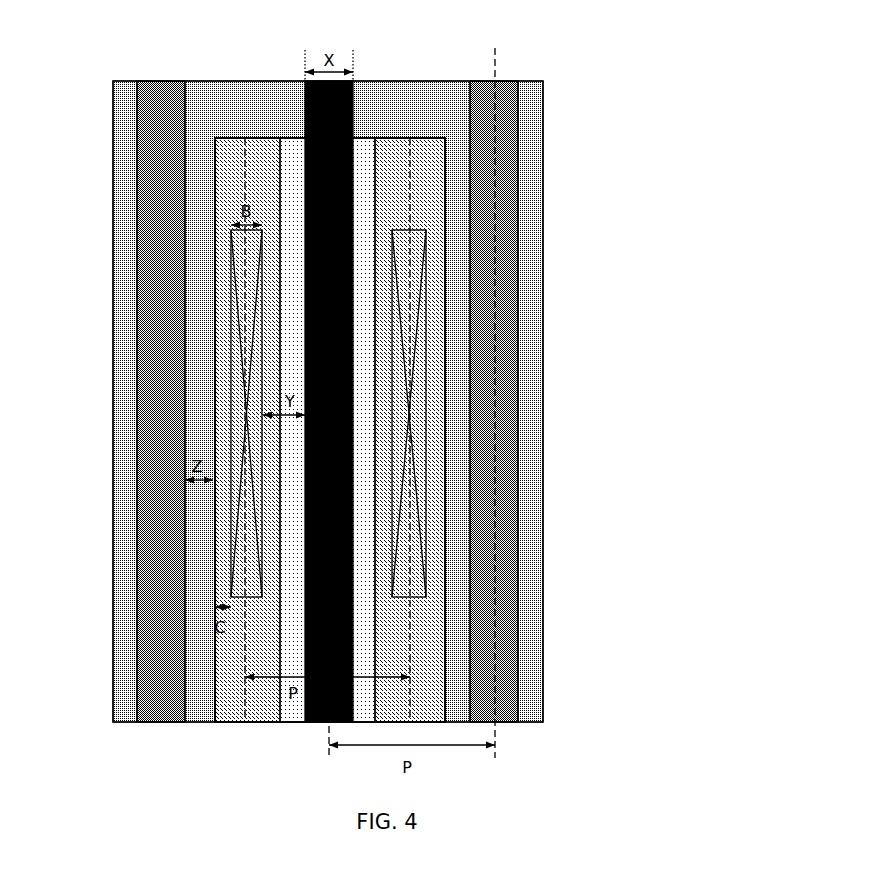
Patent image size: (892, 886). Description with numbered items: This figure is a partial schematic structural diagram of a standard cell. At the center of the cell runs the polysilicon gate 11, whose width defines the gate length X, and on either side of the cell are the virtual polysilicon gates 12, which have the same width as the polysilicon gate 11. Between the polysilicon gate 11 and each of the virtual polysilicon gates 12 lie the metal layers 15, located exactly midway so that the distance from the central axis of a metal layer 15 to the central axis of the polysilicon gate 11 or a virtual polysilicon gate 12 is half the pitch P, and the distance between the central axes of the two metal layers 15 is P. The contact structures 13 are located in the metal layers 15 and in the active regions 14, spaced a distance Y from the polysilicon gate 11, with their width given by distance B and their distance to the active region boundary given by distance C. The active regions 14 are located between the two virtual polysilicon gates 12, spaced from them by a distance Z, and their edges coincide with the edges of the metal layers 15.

The polysilicon gate 11 is at (357, 92).
The virtual polysilicon gates 12 is at (166, 82).
The contact structures 13 is at (410, 416).
The active regions 14 is at (446, 446).
The metal layers 15 is at (425, 648).